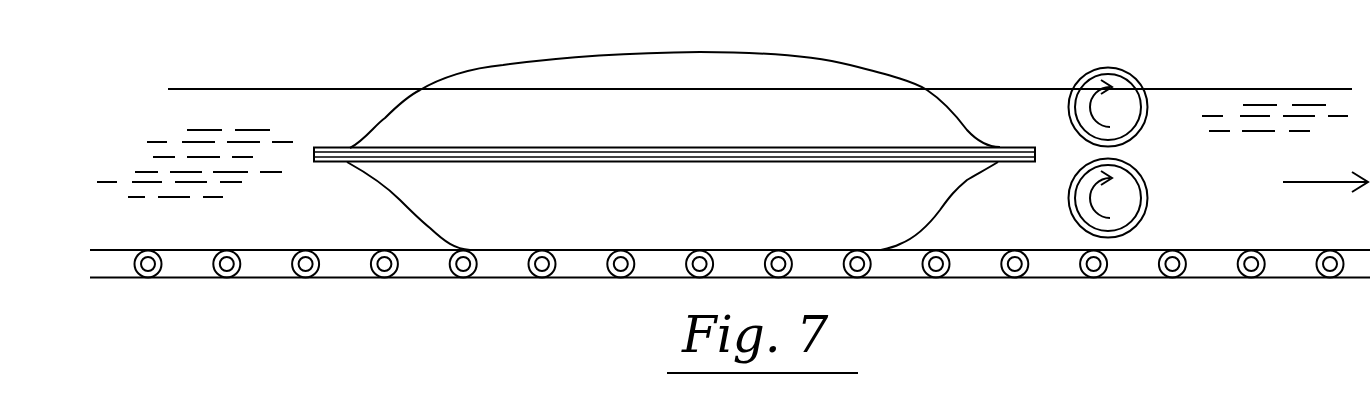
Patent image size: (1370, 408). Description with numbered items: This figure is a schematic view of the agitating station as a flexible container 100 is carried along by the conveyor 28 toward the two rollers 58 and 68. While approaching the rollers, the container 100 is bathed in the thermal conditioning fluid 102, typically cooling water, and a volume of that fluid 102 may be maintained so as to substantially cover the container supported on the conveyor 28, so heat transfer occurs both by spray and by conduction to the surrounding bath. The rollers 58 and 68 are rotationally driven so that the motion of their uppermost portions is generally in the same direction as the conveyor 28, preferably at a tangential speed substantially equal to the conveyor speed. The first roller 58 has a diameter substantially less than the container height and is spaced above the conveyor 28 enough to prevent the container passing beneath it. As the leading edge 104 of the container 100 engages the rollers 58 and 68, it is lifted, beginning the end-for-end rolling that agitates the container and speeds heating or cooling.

The conveyor 28 is at (368, 280).
The first roller 58 is at (1142, 181).
The roller 68 is at (1122, 70).
The container 100 is at (503, 65).
The thermal conditioning fluid 102 is at (293, 97).
The leading edge 104 is at (1033, 146).